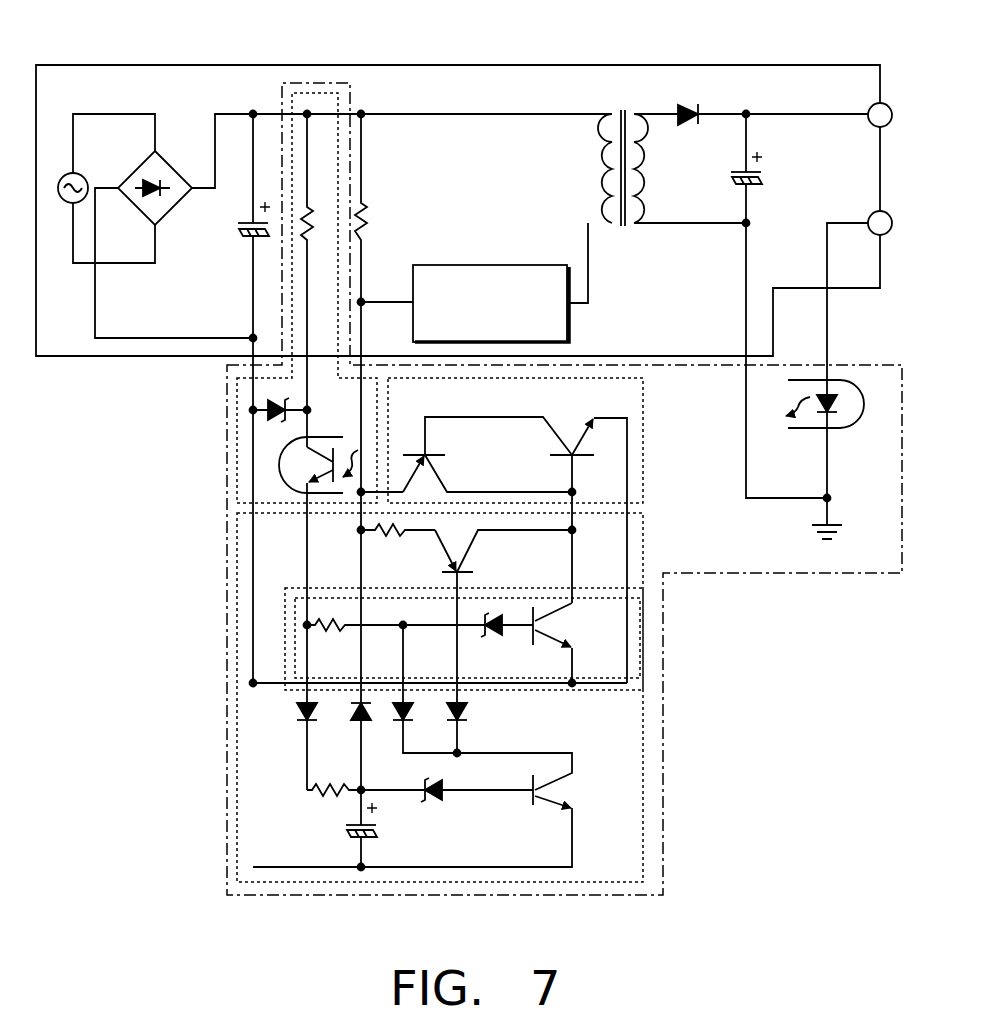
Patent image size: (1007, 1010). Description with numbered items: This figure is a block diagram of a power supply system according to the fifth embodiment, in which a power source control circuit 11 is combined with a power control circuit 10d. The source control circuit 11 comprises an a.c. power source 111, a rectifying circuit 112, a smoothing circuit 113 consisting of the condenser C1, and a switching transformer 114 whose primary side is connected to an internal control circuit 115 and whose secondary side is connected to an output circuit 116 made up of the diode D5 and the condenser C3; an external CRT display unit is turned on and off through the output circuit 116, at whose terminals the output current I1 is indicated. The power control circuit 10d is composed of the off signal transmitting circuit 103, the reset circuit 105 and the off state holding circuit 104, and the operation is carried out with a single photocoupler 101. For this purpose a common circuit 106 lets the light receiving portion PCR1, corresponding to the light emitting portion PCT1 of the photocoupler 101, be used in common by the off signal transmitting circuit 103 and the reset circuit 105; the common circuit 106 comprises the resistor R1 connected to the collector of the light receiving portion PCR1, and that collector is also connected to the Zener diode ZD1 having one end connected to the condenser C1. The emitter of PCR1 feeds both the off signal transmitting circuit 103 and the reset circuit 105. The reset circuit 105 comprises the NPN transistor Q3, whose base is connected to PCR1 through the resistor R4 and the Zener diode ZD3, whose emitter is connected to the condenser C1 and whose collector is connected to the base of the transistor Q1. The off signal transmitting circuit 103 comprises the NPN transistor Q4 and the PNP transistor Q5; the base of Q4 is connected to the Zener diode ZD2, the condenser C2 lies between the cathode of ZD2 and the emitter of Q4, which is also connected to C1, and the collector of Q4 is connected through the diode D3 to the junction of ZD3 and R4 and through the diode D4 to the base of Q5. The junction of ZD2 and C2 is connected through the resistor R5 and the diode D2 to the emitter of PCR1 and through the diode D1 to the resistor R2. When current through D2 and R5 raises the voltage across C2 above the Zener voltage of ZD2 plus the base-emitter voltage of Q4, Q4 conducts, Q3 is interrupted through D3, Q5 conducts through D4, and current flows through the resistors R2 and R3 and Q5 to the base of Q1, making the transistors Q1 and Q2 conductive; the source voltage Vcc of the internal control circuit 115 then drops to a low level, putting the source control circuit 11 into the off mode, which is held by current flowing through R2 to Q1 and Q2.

The power source control circuit 11 is at (480, 65).
The a.c. power source 111 is at (86, 177).
The rectifying circuit 112 is at (172, 170).
The smoothing circuit 113 is at (208, 398).
The switching transformer 114 is at (623, 152).
The internal control circuit 115 is at (497, 262).
The output circuit 116 is at (698, 176).
The photocoupler 101 is at (827, 459).
The off signal transmitting circuit 103 is at (645, 725).
The off state holding circuit 104 is at (648, 482).
The reset circuit 105 is at (645, 617).
The common circuit 106 is at (227, 440).
The power control circuit 10d is at (225, 708).
The condenser C1 is at (244, 288).
The condenser C2 is at (379, 830).
The condenser C3 is at (779, 306).
The resistor R1 is at (319, 452).
The resistor R2 is at (373, 490).
The resistor R3 is at (398, 544).
The resistor R4 is at (355, 638).
The resistor R5 is at (332, 804).
The Zener diode ZD1 is at (276, 400).
The Zener diode ZD2 is at (447, 807).
The Zener diode ZD3 is at (468, 641).
The diode D1 is at (348, 727).
The diode D2 is at (293, 727).
The diode D3 is at (482, 707).
The diode D4 is at (470, 728).
The diode D5 is at (688, 101).
The transistor Q1 is at (578, 550).
The transistor Q2 is at (466, 454).
The NPN transistor Q3 is at (567, 643).
The NPN transistor Q4 is at (429, 821).
The PNP transistor Q5 is at (503, 616).
The light receiving portion PCR1 is at (333, 433).
The light emitting portion PCT1 is at (855, 425).
The source voltage Vcc is at (387, 319).
The current I1 is at (838, 240).